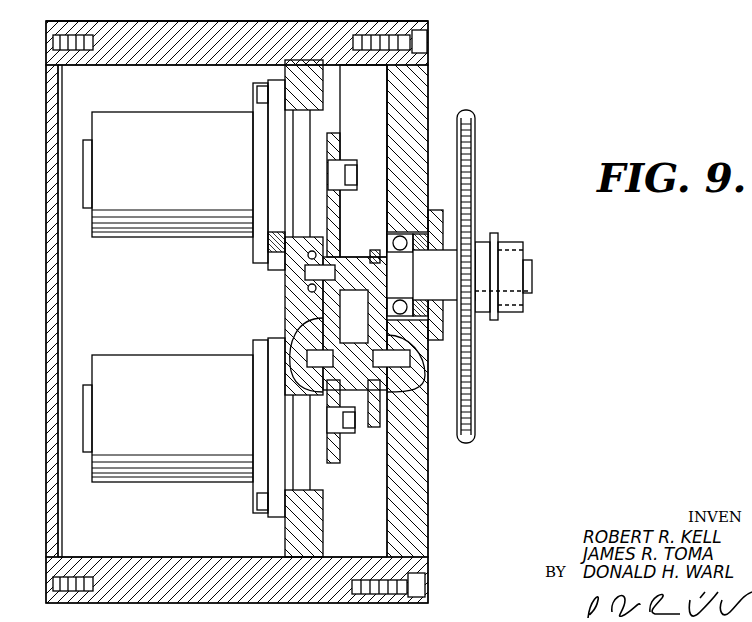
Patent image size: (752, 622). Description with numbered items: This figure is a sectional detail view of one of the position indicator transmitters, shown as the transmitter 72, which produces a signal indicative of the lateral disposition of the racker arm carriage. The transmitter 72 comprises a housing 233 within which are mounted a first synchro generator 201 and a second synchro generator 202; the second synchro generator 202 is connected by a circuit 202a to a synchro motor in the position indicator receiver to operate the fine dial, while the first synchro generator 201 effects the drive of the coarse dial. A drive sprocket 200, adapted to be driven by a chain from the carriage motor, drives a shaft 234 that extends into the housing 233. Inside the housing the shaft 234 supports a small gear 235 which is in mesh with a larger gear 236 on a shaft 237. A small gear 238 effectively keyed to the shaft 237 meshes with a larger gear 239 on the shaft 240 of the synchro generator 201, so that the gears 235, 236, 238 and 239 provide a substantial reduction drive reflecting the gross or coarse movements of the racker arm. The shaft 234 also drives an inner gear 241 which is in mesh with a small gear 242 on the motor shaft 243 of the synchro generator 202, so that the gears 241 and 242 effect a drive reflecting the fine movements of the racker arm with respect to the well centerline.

The transmitter 72 is at (437, 73).
The housing 233 is at (240, 21).
The circuit 202a is at (652, 7).
The drive sprocket 200 is at (477, 161).
The first synchro generator 201 is at (168, 418).
The second synchro generator 202 is at (168, 174).
The shaft 234 is at (445, 259).
The small gear 235 is at (372, 252).
The larger gear 236 is at (373, 428).
The shaft 237 is at (405, 380).
The small gear 238 is at (292, 330).
The larger gear 239 is at (337, 463).
The shaft 240 is at (292, 432).
The inner gear 241 is at (292, 218).
The small gear 242 is at (338, 167).
The motor shaft 243 is at (331, 174).